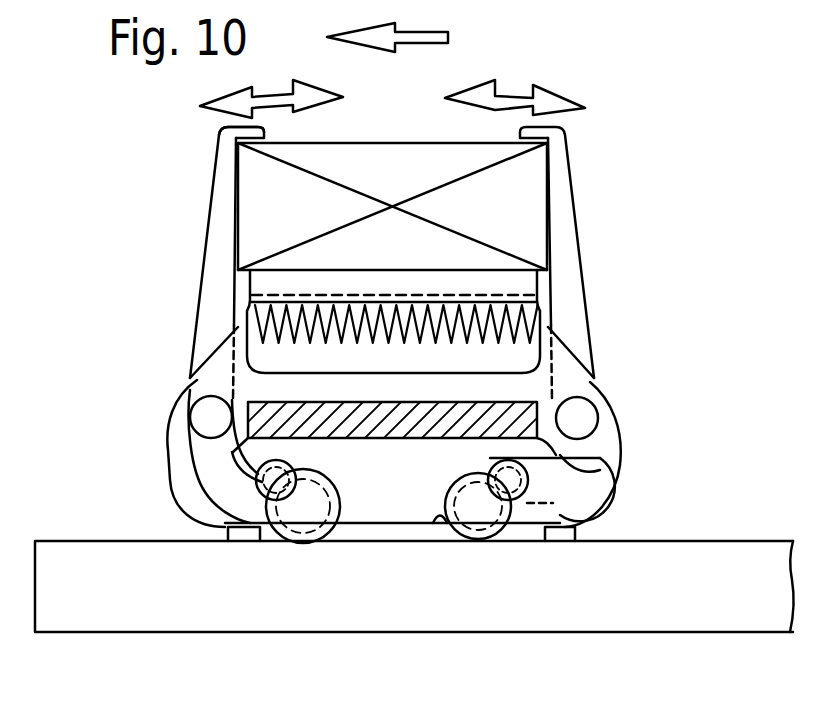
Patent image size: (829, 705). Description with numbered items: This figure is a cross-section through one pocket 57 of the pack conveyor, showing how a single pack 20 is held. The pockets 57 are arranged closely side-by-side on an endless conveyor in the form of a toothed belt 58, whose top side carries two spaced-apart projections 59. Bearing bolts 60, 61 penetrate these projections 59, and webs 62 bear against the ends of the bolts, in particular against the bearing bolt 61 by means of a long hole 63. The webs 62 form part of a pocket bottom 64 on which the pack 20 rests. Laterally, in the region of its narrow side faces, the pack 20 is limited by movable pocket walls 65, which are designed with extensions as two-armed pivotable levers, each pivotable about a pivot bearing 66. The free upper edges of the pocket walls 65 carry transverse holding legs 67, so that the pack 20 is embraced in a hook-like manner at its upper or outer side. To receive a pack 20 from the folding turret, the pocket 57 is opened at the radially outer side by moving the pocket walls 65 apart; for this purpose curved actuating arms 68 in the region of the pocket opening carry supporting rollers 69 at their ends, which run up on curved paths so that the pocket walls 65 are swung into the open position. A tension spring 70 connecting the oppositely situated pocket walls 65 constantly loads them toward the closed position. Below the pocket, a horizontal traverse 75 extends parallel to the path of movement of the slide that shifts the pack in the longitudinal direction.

The pack 20 is at (395, 165).
The pocket 57 is at (610, 143).
The toothed belt 58 is at (755, 565).
The projections 59 is at (232, 533).
The bearing bolt 60 is at (220, 489).
The bearing bolt 61 is at (528, 533).
The webs 62 is at (597, 462).
The long hole 63 is at (590, 492).
The pocket bottom 64 is at (540, 282).
The pocket walls 65 is at (216, 184).
The pivot bearing 66 is at (205, 418).
The holding legs 67 is at (257, 125).
The actuating arms 68 is at (253, 533).
The supporting rollers 69 is at (303, 543).
The tension spring 70 is at (510, 327).
The traverse 75 is at (400, 440).